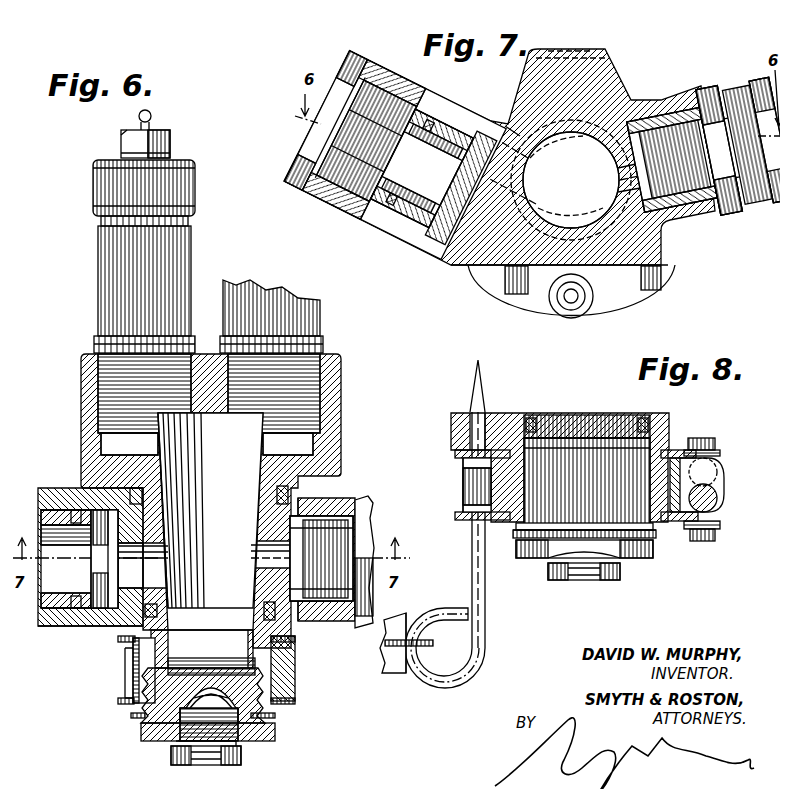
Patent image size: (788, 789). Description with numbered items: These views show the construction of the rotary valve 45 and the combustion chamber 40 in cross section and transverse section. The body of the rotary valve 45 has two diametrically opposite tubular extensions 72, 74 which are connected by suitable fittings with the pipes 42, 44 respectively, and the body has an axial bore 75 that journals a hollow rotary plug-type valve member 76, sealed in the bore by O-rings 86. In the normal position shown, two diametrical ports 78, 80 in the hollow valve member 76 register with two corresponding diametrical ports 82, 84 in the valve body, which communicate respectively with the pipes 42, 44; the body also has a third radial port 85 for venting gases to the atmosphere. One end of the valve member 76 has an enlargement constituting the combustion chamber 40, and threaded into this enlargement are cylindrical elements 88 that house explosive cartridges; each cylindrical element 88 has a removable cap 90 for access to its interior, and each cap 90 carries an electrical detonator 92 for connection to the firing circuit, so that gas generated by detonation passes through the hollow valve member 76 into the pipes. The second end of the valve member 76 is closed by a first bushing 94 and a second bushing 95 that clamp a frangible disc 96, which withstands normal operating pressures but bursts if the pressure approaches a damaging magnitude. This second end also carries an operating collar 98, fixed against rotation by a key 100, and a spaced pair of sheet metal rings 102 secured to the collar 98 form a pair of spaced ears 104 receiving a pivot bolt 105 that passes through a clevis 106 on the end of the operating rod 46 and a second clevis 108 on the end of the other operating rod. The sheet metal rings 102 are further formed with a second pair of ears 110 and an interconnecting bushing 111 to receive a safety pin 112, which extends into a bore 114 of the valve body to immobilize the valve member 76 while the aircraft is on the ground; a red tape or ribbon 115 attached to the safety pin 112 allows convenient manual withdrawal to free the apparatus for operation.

In FIG. 6, the combustion chamber 40 is at (66, 382).
In FIG. 7, the pipe 42 is at (308, 135).
In FIG. 7, the pipe 44 is at (765, 196).
In FIG. 6, the rotary valve 45 is at (100, 619).
In FIG. 7, the rotary valve 45 is at (452, 262).
In FIG. 8, the rotary valve 45 is at (450, 410).
In FIG. 8, the operating rod 46 is at (714, 498).
In FIG. 6, the tubular extension 72 is at (38, 619).
In FIG. 7, the tubular extension 72 is at (431, 93).
In FIG. 6, the tubular extension 74 is at (322, 614).
In FIG. 7, the tubular extension 74 is at (668, 90).
In FIG. 6, the axial bore 75 is at (165, 520).
In FIG. 7, the axial bore 75 is at (497, 117).
In FIG. 6, the rotary plug-type valve member 76 is at (252, 512).
In FIG. 7, the rotary plug-type valve member 76 is at (522, 150).
In FIG. 8, the rotary plug-type valve member 76 is at (587, 482).
In FIG. 6, the diametrical port 78 is at (160, 565).
In FIG. 7, the diametrical port 78 is at (535, 186).
In FIG. 6, the diametrical port 80 is at (250, 538).
In FIG. 7, the diametrical port 80 is at (612, 153).
In FIG. 6, the diametrical port 82 is at (122, 572).
In FIG. 7, the diametrical port 82 is at (505, 188).
In FIG. 6, the diametrical port 84 is at (270, 560).
In FIG. 7, the diametrical port 84 is at (612, 172).
In FIG. 7, the third radial port 85 is at (548, 262).
In FIG. 6, the O-rings 86 is at (281, 490).
In FIG. 8, the O-rings 86 is at (650, 408).
In FIG. 6, the cylindrical elements 88 is at (221, 283).
In FIG. 6, the cap 90 is at (187, 184).
In FIG. 6, the electrical detonator 92 is at (147, 109).
In FIG. 6, the first bushing 94 is at (133, 725).
In FIG. 8, the first bushing 94 is at (522, 552).
In FIG. 6, the second bushing 95 is at (200, 758).
In FIG. 8, the second bushing 95 is at (575, 573).
In FIG. 6, the frangible disc 96 is at (203, 690).
In FIG. 6, the operating collar 98 is at (288, 660).
In FIG. 6, the key 100 is at (118, 662).
In FIG. 6, the sheet metal rings 102 is at (288, 632).
In FIG. 8, the sheet metal rings 102 is at (666, 441).
In FIG. 8, the ears 104 is at (712, 443).
In FIG. 8, the pivot bolt 105 is at (700, 430).
In FIG. 8, the clevis 106 is at (712, 488).
In FIG. 8, the second clevis 108 is at (712, 465).
In FIG. 8, the second pair of ears 110 is at (447, 446).
In FIG. 8, the interconnecting bushing 111 is at (454, 476).
In FIG. 8, the safety pin 112 is at (463, 585).
In FIG. 8, the bore 114 is at (480, 406).
In FIG. 8, the red tape or ribbon 115 is at (398, 666).